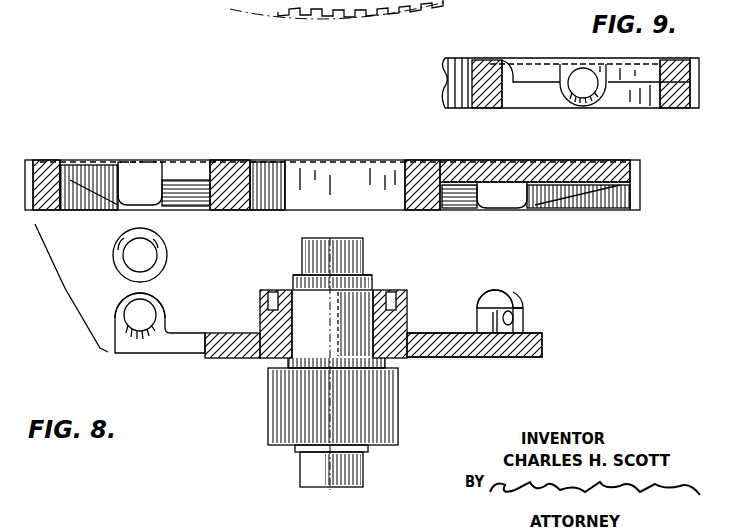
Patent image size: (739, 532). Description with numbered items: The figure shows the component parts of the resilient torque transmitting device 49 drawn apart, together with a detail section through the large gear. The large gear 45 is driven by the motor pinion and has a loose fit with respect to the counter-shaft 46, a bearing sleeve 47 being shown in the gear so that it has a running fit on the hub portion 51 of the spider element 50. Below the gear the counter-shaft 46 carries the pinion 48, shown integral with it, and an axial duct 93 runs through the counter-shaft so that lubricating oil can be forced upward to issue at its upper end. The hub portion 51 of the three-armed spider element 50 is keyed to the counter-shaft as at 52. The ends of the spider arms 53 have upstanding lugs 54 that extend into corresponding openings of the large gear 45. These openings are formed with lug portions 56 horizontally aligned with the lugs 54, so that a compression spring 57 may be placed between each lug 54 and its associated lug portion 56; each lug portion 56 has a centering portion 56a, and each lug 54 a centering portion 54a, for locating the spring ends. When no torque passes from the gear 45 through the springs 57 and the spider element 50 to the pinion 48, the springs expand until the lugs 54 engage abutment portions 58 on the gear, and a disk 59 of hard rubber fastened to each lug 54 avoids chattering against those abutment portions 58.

In FIG. 8, the large gear 45 is at (42, 164).
In FIG. 9, the large gear 45 is at (687, 108).
In FIG. 8, the counter-shaft 46 is at (377, 292).
In FIG. 8, the bearing sleeve 47 is at (410, 160).
In FIG. 8, the pinion 48 is at (395, 407).
In FIG. 8, the resilient torque transmitting device 49 is at (71, 288).
In FIG. 8, the spider element 50 is at (474, 368).
In FIG. 8, the hub portion 51 is at (407, 311).
In FIG. 8, the key 52 is at (292, 290).
In FIG. 8, the spider arms 53 is at (183, 357).
In FIG. 8, the lug 54 is at (165, 306).
In FIG. 8, the centering portion 54a is at (134, 314).
In FIG. 9, the lug portion 56 is at (598, 104).
In FIG. 9, the centering portion 56a is at (588, 86).
In FIG. 8, the compression spring 57 is at (165, 246).
In FIG. 8, the abutment portion 58 is at (140, 175).
In FIG. 8, the disk 59 is at (501, 311).
In FIG. 8, the axial duct 93 is at (330, 336).